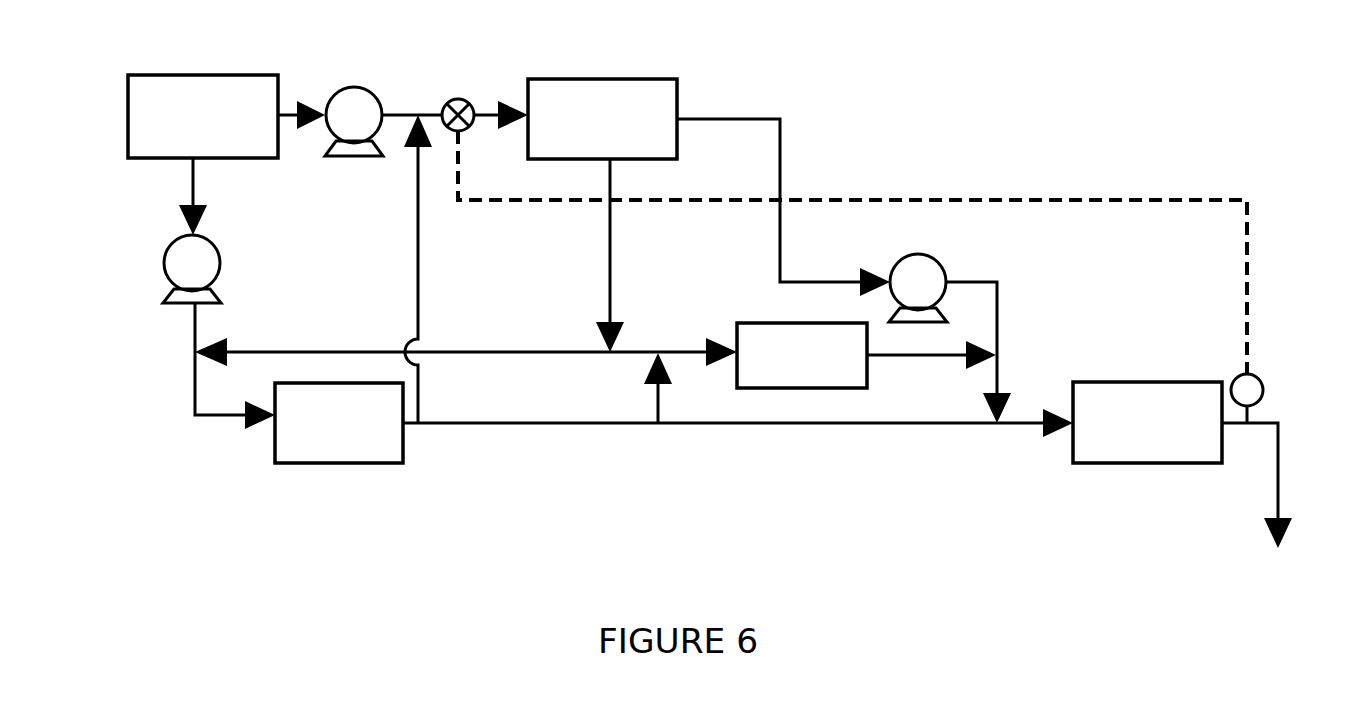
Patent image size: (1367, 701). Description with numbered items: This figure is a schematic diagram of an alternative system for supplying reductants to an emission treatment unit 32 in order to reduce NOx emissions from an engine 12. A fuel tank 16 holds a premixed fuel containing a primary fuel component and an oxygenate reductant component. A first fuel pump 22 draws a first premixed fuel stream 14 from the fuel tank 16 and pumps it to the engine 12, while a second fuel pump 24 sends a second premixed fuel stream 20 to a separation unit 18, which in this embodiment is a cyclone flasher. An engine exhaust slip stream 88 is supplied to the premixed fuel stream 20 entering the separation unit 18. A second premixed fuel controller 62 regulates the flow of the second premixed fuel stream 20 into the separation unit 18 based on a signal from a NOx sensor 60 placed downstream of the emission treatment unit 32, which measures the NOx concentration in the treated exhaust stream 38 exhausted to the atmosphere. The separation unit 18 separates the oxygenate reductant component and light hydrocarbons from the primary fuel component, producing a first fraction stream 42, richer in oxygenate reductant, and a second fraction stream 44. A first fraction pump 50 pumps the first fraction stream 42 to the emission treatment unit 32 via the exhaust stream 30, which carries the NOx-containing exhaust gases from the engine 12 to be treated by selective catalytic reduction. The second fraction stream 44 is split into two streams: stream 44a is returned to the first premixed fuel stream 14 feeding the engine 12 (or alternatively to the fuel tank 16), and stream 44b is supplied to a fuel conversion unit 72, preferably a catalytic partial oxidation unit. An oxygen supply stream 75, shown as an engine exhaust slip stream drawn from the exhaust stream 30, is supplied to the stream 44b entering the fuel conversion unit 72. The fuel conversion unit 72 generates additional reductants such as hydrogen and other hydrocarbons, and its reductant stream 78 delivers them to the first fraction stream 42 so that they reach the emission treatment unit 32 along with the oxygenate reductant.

The engine 12 is at (340, 463).
The first premixed fuel stream 14 is at (193, 334).
The fuel tank 16 is at (128, 108).
The separation unit 18 is at (640, 79).
The second premixed fuel stream 20 is at (400, 113).
The first fuel pump 22 is at (164, 263).
The second fuel pump 24 is at (355, 88).
The exhaust stream 30 is at (563, 423).
The emission treatment unit 32 is at (1155, 463).
The treated exhaust stream 38 is at (1283, 472).
The first fraction stream 42 is at (737, 119).
The second fraction stream 44 is at (610, 272).
The second fraction stream 44a is at (483, 352).
The second fraction stream 44b is at (673, 352).
The first fraction pump 50 is at (935, 258).
The NOx sensor 60 is at (1263, 390).
The second premixed fuel controller 62 is at (463, 99).
The fuel conversion unit 72 is at (768, 323).
The oxygen supply stream 75 is at (657, 400).
The reductant stream 78 is at (912, 355).
The engine exhaust slip stream 88 is at (418, 223).